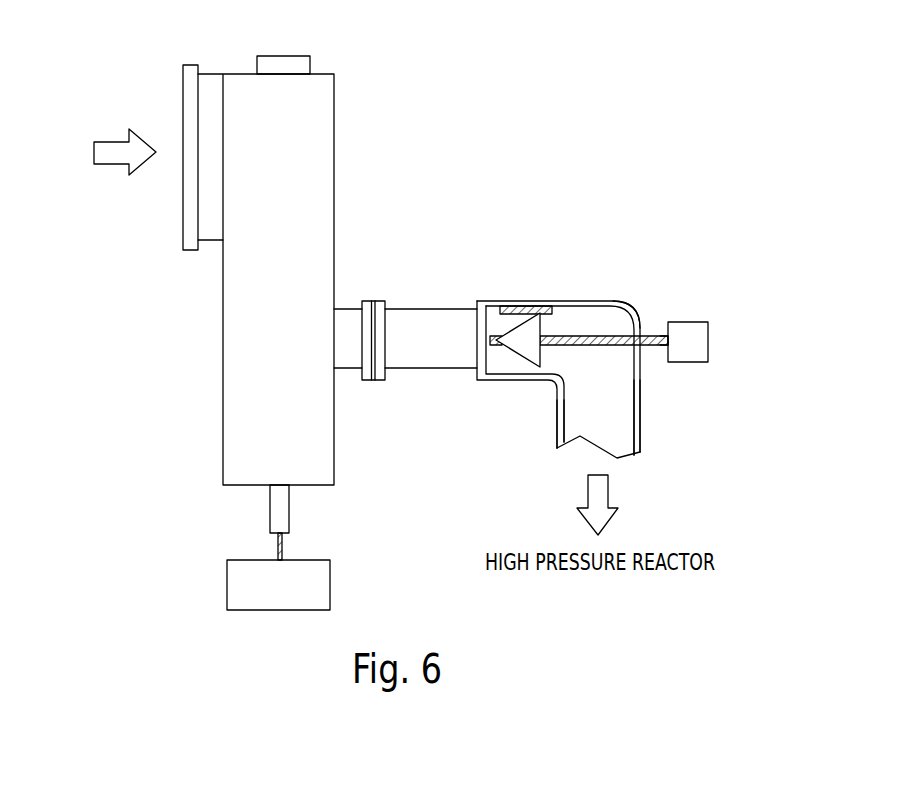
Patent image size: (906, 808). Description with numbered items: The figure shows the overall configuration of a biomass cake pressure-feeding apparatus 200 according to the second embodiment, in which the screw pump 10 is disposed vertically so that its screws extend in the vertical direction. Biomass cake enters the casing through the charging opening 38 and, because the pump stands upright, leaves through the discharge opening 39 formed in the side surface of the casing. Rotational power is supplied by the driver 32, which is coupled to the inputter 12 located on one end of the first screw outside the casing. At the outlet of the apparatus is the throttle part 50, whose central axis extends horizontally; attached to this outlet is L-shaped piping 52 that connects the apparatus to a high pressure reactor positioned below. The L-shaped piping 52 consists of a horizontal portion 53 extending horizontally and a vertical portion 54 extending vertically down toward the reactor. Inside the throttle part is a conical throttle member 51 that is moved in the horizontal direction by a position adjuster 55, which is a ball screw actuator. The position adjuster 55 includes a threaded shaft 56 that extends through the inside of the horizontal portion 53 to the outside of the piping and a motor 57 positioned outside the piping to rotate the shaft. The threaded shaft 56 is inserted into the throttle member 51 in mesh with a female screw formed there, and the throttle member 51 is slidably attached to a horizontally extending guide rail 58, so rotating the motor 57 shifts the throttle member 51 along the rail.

The biomass cake pressure-feeding apparatus 200 is at (512, 92).
The screw pump 10 is at (338, 149).
The charging opening 38 is at (183, 97).
The inputter 12 is at (270, 505).
The driver 32 is at (227, 582).
The throttle part 50 is at (421, 287).
The discharge opening 39 is at (385, 380).
The horizontal portion 53 is at (520, 300).
The guide rail 58 is at (538, 305).
The threaded shaft 56 is at (590, 335).
The L-shaped piping 52 is at (620, 301).
The position adjuster 55 is at (648, 333).
The motor 57 is at (688, 322).
The throttle member 51 is at (524, 352).
The vertical portion 54 is at (640, 392).